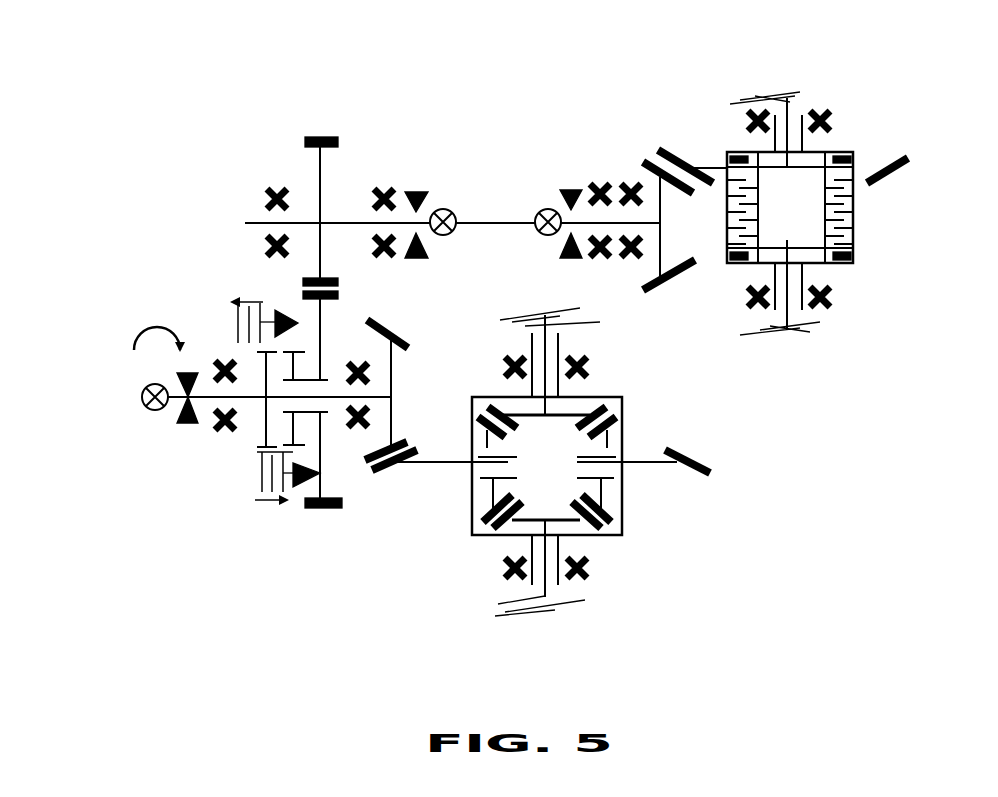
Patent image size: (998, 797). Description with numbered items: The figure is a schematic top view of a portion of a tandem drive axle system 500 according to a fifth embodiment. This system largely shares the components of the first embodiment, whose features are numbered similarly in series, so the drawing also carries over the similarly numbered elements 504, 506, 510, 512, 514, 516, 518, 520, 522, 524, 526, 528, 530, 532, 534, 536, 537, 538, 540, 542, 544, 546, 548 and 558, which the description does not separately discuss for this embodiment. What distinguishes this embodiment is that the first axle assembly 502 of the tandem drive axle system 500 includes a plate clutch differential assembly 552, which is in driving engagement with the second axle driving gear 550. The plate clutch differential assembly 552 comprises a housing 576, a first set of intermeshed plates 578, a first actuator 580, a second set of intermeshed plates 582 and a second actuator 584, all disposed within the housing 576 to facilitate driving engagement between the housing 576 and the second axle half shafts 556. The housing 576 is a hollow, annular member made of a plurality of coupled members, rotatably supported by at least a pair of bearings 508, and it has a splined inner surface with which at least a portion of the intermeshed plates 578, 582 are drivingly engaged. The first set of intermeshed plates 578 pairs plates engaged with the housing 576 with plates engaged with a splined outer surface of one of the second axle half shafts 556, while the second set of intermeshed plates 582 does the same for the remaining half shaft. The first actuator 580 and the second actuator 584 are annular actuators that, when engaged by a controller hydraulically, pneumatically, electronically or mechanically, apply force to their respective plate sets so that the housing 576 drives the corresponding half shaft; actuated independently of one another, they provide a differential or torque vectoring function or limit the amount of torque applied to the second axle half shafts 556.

The tandem drive axle system 500 is at (128, 113).
The first axle assembly 502 is at (318, 608).
The clutch assembly 504 is at (697, 98).
The input shaft 506 is at (213, 405).
The bearing 508 is at (388, 192).
The gear 510 is at (393, 374).
The gear 512 is at (663, 465).
The differential housing 514 is at (622, 530).
The side gear 516 is at (605, 446).
The pinion gear 518 is at (527, 415).
The axle shaft 520 is at (548, 335).
The wheel 522 is at (545, 315).
The intermediate shaft 524 is at (472, 222).
The shaft 526 is at (320, 324).
The clutch 528 is at (258, 470).
The motor 530 is at (150, 402).
The clutch 532 is at (262, 447).
The output shaft 534 is at (378, 400).
The brake 536 is at (320, 165).
The coupling 537 is at (535, 232).
The gear 538 is at (660, 243).
The sun gear 540 is at (300, 378).
The brake 542 is at (342, 508).
The actuator 544 is at (320, 327).
The actuator 546 is at (303, 490).
The actuator 548 is at (255, 502).
The second axle driving gear 550 is at (880, 170).
The plate clutch differential assembly 552 is at (860, 257).
The second axle half shaft 556 is at (772, 143).
The wheel 558 is at (790, 97).
The housing 576 is at (850, 228).
The first set of intermeshed plates 578 is at (847, 212).
The first actuator 580 is at (843, 268).
The second set of intermeshed plates 582 is at (757, 198).
The second actuator 584 is at (852, 157).